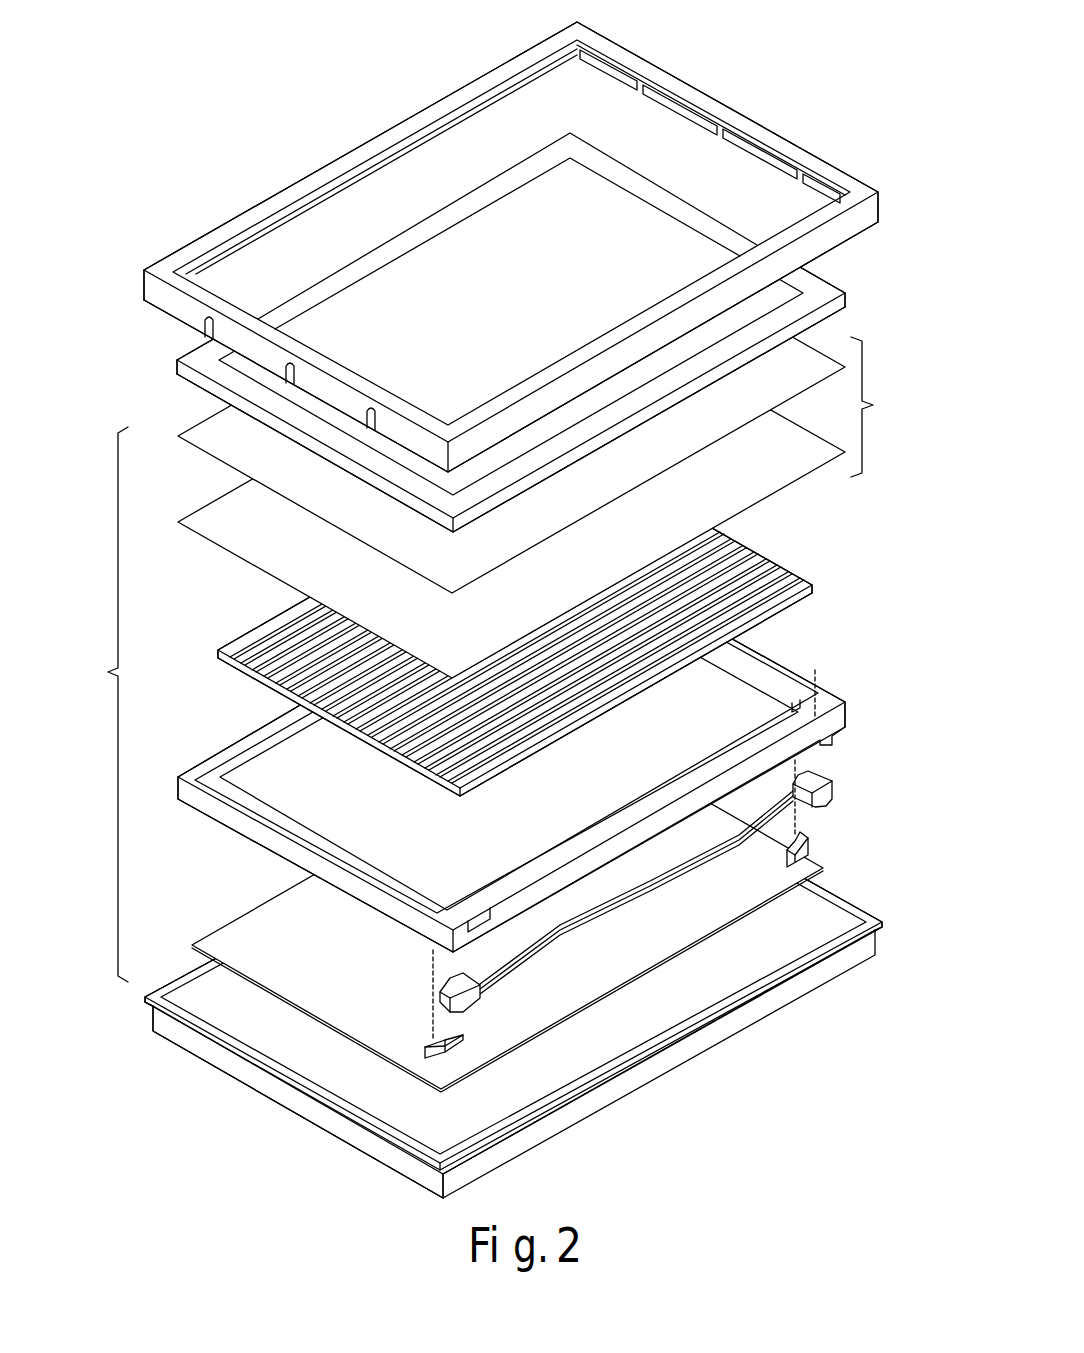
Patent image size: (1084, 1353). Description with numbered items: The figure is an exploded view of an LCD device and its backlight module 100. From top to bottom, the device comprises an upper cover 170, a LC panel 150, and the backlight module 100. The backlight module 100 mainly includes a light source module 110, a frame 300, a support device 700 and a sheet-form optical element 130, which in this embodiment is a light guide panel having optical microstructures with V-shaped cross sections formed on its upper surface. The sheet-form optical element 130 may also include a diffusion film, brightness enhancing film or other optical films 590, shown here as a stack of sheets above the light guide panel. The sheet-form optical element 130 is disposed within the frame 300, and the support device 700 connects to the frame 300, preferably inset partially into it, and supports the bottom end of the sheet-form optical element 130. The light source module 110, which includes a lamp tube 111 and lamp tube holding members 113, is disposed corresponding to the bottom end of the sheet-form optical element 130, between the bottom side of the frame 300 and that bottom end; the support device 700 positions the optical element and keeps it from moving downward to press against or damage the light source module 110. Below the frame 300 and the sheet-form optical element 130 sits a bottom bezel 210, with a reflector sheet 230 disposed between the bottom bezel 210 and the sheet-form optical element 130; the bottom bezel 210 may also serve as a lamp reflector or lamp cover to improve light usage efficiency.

The backlight module 100 is at (90, 704).
The light source module 110 is at (818, 780).
The lamp tube 111 is at (646, 891).
The lamp tube holding members 113 is at (478, 993).
The sheet-form optical element 130 is at (783, 562).
The LC panel 150 is at (823, 292).
The upper cover 170 is at (683, 90).
The bottom bezel 210 is at (828, 945).
The reflector sheet 230 is at (823, 868).
The frame 300 is at (216, 782).
The optical films 590 is at (556, 444).
The support device 700 is at (808, 840).